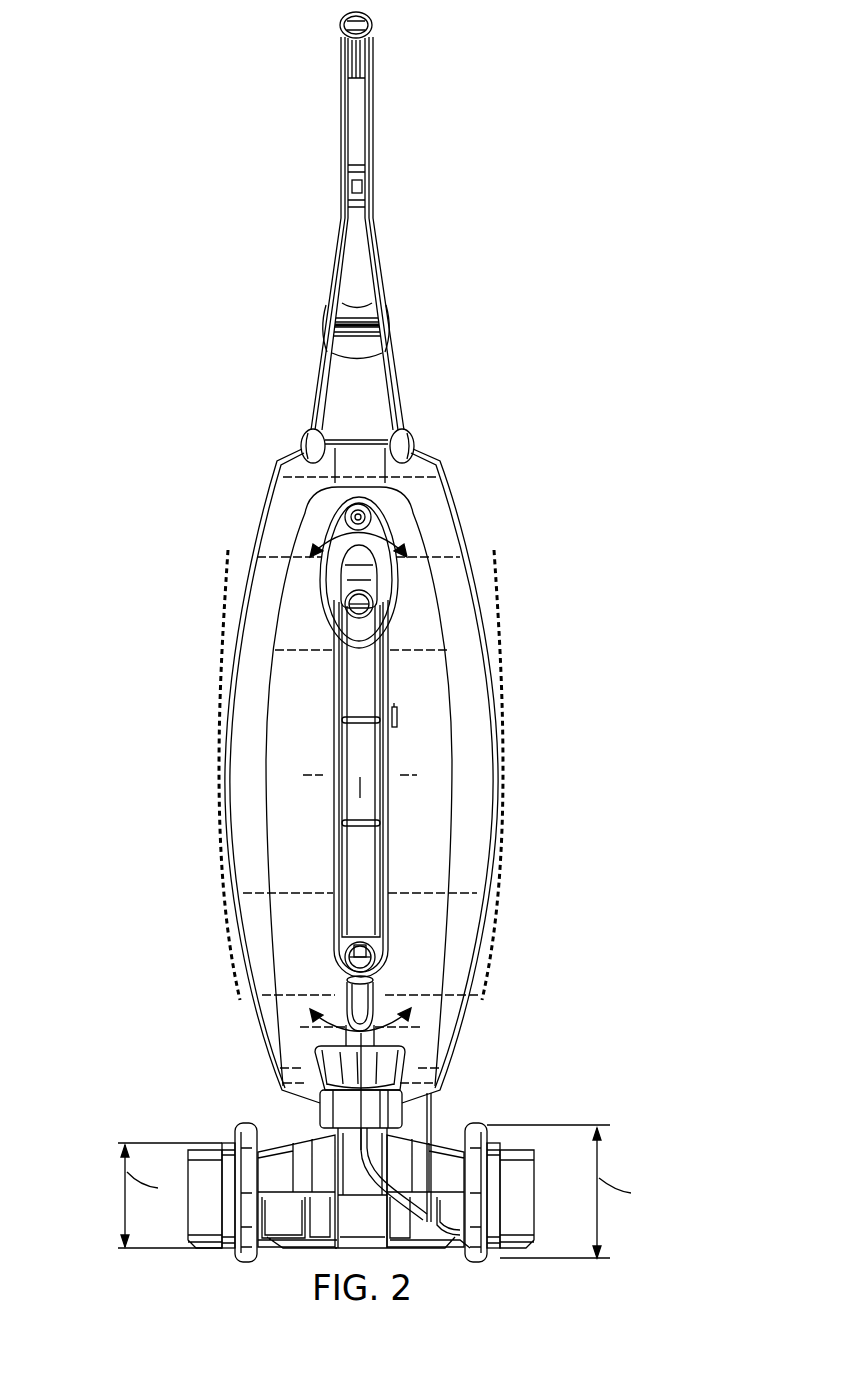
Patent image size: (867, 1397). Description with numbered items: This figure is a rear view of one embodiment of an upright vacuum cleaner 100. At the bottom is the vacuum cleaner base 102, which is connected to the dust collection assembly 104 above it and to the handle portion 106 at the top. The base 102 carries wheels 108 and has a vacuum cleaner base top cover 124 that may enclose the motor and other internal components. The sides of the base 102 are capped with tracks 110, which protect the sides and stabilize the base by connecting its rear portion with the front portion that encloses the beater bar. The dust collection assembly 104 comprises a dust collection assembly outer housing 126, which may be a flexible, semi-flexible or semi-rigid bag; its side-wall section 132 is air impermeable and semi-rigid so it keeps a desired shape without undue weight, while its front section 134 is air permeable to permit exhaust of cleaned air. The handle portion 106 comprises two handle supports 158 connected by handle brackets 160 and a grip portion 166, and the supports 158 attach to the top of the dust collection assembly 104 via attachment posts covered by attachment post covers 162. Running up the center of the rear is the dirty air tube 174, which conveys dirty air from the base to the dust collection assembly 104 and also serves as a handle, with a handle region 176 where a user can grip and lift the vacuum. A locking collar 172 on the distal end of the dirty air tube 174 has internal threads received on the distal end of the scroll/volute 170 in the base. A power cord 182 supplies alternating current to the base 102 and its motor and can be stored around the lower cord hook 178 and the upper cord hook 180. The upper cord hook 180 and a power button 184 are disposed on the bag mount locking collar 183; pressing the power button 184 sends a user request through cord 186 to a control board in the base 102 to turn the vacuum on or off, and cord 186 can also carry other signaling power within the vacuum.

The upright vacuum cleaner 100 is at (532, 242).
The vacuum cleaner base 102 is at (112, 1125).
The dust collection assembly 104 is at (122, 1120).
The handle portion 106 is at (122, 12).
The wheels 108 is at (245, 1257).
The tracks 110 is at (203, 1211).
The vacuum cleaner base top cover 124 is at (302, 1162).
The dust collection assembly outer housing 126 is at (243, 709).
The side-wall section 132 is at (477, 747).
The front section 134 is at (352, 460).
The handle supports 158 is at (368, 122).
The handle brackets 160 is at (357, 200).
The attachment post covers 162 is at (406, 441).
The grip portion 166 is at (362, 27).
The scroll/volute 170 is at (376, 1224).
The locking collar 172 is at (328, 1113).
The dirty air tube 174 is at (362, 693).
The handle region 176 is at (362, 763).
The lower cord hook 178 is at (375, 986).
The upper cord hook 180 is at (372, 583).
The power cord 182 is at (360, 1054).
The bag mount locking collar 183 is at (340, 532).
The power button 184 is at (365, 517).
The cord 186 is at (433, 1118).